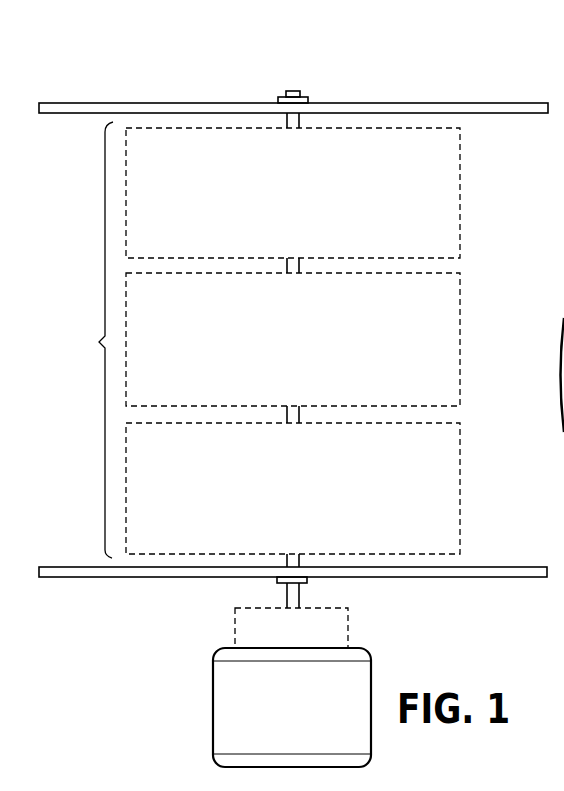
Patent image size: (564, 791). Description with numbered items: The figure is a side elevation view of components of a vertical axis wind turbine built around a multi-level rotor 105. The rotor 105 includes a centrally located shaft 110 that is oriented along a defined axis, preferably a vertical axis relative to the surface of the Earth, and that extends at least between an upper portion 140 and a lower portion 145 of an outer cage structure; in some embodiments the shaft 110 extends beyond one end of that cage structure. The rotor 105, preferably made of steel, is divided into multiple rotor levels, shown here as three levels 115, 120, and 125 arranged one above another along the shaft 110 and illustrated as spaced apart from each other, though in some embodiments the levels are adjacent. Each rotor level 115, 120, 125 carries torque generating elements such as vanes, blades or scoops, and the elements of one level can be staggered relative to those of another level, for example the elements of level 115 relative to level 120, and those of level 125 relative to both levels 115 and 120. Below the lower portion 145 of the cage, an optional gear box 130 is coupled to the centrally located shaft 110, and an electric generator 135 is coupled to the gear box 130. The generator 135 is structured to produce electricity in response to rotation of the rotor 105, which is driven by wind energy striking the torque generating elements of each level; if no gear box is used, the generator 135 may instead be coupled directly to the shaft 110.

The rotor 105 is at (88, 340).
The centrally located shaft 110 is at (292, 89).
The rotor level 115 is at (310, 206).
The rotor level 120 is at (310, 355).
The rotor level 125 is at (310, 503).
The gear box 130 is at (353, 627).
The electric generator 135 is at (213, 710).
The upper portion 140 is at (508, 103).
The lower portion 145 is at (505, 578).